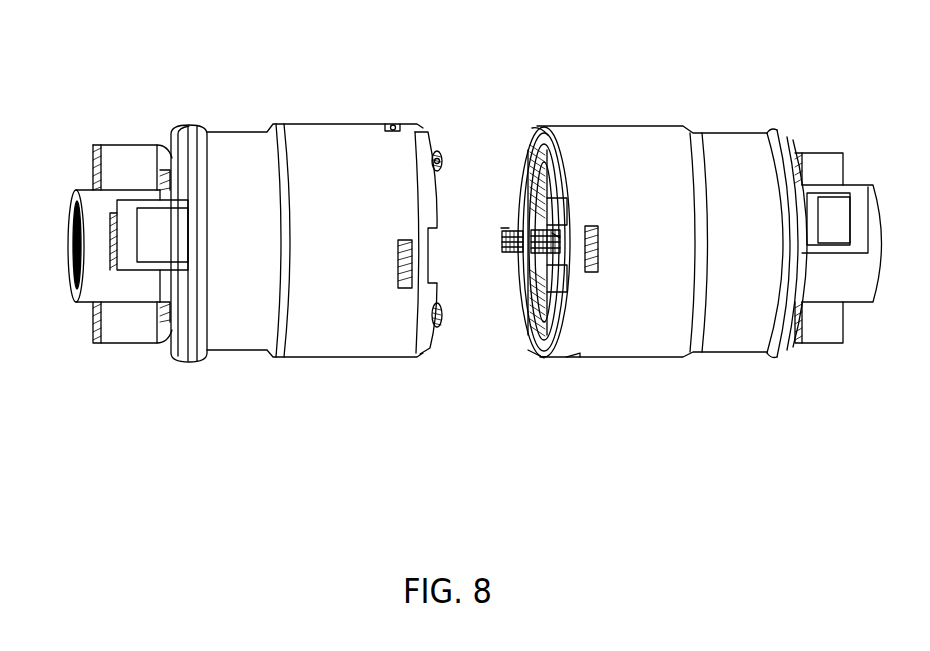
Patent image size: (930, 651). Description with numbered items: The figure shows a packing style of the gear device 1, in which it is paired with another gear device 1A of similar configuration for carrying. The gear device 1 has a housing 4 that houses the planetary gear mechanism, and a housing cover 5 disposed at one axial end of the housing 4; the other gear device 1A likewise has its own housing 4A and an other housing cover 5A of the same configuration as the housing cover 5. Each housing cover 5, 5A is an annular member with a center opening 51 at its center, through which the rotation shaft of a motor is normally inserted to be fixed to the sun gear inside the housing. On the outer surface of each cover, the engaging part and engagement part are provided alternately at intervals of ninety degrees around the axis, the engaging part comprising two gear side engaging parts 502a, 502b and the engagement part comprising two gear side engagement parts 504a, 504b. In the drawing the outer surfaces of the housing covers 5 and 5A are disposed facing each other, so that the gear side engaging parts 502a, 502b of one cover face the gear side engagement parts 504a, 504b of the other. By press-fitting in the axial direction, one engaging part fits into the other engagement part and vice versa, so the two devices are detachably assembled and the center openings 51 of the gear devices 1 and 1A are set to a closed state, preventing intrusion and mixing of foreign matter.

The gear device 1 is at (650, 112).
The other gear device 1A is at (298, 106).
The housing 4 is at (706, 378).
The housing 4A is at (299, 371).
The housing cover 5 is at (512, 326).
The other housing cover 5A is at (446, 244).
The center opening 51 is at (517, 274).
The gear side engaging part 502a is at (505, 229).
The gear side engaging part 502b is at (437, 328).
The gear side engagement part 504a is at (530, 356).
The gear side engagement part 504b is at (534, 124).